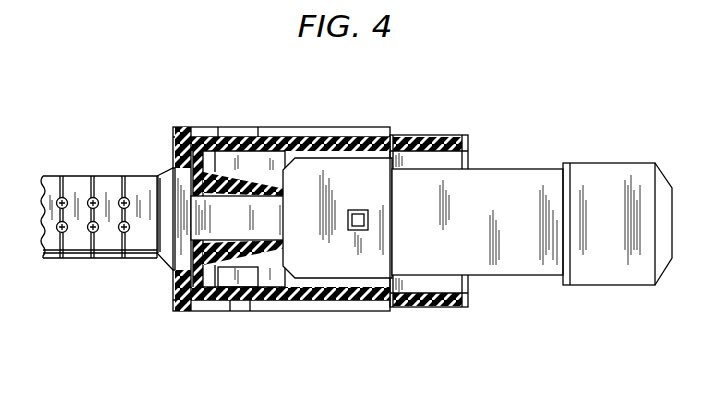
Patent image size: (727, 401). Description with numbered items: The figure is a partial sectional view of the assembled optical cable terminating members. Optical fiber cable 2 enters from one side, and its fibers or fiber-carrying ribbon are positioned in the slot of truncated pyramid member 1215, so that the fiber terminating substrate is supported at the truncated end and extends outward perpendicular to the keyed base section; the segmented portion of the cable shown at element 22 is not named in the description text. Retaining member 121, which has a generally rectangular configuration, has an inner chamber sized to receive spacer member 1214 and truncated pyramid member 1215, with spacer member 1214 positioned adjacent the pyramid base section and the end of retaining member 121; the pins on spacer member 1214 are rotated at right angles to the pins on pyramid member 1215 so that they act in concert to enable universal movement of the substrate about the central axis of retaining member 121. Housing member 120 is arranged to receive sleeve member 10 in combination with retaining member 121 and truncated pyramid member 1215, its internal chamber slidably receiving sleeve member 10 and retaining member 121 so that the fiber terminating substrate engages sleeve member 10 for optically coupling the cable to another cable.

The optical fiber cable 2 is at (233, 223).
The sleeve member 10 is at (533, 268).
The watch band links 22 is at (88, 176).
The housing member 120 is at (370, 313).
The retaining member 121 is at (340, 143).
The spacer member 1214 is at (202, 155).
The truncated pyramid member 1215 is at (267, 190).